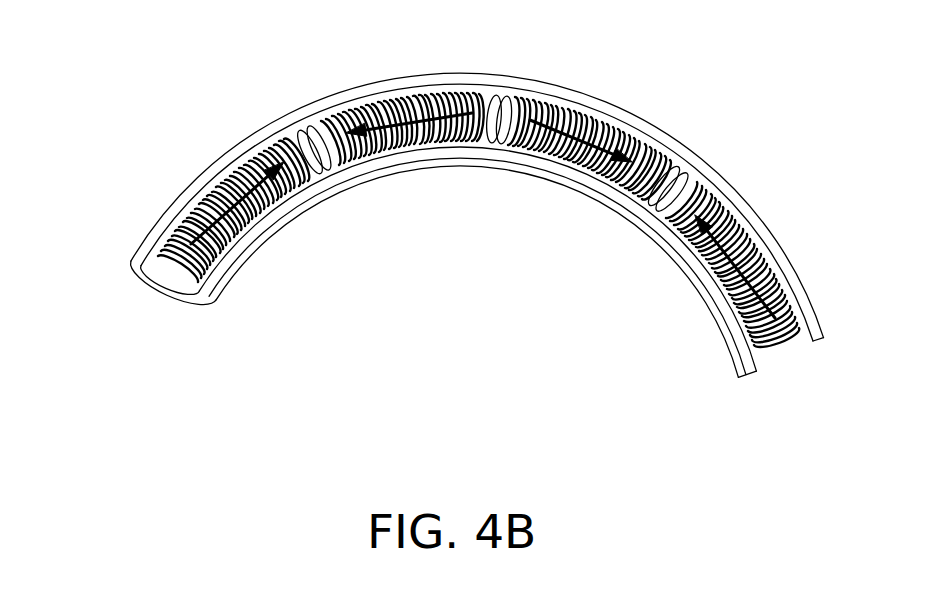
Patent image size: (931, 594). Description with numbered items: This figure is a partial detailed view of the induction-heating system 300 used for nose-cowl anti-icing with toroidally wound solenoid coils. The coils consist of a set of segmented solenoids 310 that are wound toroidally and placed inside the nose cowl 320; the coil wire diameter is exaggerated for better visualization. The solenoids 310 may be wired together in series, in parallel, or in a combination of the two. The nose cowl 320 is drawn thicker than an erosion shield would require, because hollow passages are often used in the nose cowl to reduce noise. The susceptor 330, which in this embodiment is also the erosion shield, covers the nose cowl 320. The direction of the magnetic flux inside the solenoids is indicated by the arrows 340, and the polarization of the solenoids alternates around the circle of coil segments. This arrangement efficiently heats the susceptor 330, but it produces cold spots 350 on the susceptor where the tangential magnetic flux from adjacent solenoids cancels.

The induction-heating system 300 is at (448, 231).
The segmented solenoids 310 is at (240, 236).
The nose cowl 320 is at (175, 205).
The susceptor 330 is at (803, 343).
The arrows 340 is at (587, 121).
The cold spots 350 is at (298, 127).